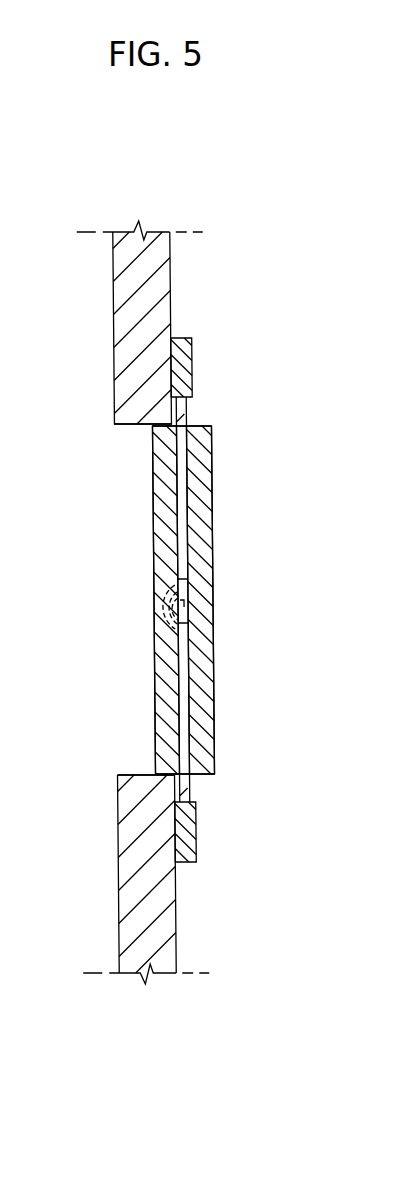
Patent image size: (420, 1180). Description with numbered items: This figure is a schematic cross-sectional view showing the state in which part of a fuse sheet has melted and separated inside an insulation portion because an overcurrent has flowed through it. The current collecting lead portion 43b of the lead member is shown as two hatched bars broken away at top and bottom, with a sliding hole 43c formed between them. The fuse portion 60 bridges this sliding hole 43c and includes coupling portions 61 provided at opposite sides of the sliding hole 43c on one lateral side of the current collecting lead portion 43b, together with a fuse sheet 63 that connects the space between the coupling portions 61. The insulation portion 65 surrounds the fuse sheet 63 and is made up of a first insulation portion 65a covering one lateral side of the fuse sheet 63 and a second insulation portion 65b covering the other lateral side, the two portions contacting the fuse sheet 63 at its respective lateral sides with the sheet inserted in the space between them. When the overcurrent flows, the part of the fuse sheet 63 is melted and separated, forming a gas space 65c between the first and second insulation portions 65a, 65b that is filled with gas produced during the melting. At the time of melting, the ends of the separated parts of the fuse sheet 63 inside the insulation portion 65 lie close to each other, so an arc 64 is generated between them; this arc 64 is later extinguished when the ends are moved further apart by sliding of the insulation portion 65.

The current collecting lead portion 43b is at (170, 283).
The sliding hole 43c is at (130, 427).
The fuse portion 60 is at (273, 492).
The coupling portions 61 is at (194, 356).
The fuse sheet 63 is at (183, 466).
The arc 64 is at (180, 603).
The insulation portion 65 is at (296, 536).
The first insulation portion 65a is at (168, 551).
The second insulation portion 65b is at (205, 609).
The gas space 65c is at (168, 622).